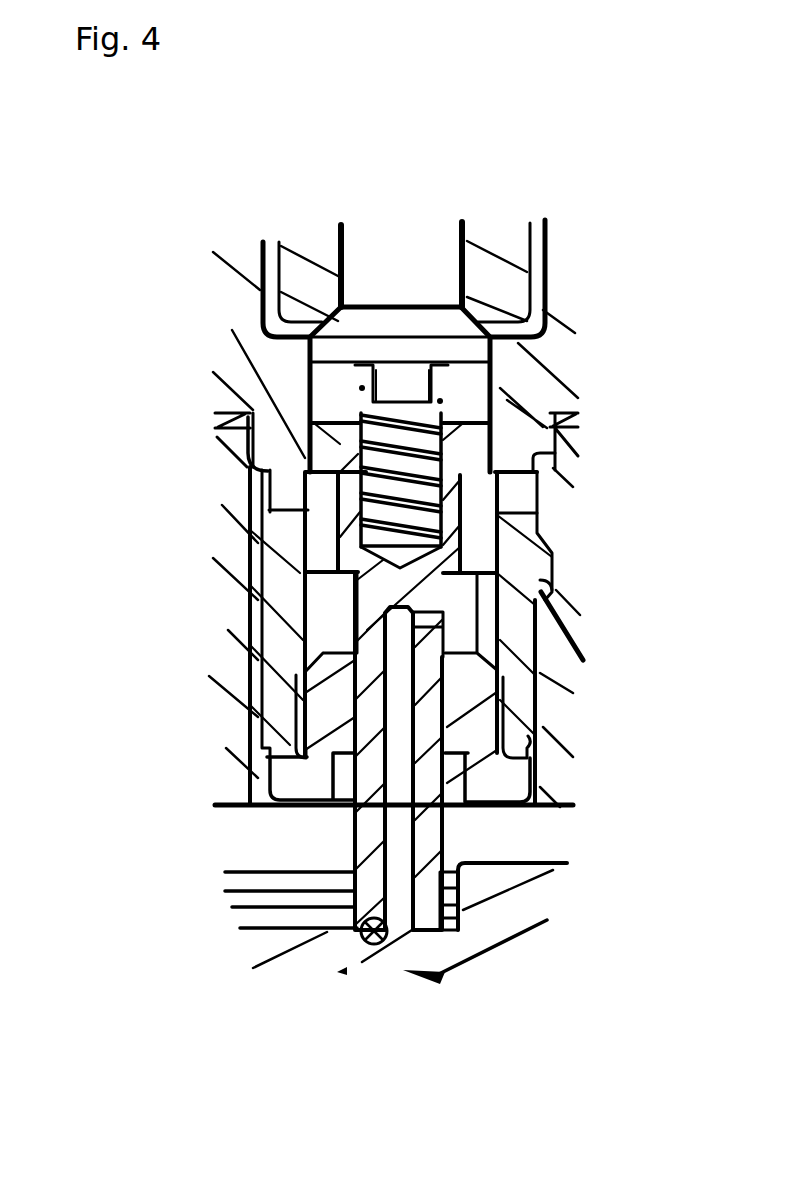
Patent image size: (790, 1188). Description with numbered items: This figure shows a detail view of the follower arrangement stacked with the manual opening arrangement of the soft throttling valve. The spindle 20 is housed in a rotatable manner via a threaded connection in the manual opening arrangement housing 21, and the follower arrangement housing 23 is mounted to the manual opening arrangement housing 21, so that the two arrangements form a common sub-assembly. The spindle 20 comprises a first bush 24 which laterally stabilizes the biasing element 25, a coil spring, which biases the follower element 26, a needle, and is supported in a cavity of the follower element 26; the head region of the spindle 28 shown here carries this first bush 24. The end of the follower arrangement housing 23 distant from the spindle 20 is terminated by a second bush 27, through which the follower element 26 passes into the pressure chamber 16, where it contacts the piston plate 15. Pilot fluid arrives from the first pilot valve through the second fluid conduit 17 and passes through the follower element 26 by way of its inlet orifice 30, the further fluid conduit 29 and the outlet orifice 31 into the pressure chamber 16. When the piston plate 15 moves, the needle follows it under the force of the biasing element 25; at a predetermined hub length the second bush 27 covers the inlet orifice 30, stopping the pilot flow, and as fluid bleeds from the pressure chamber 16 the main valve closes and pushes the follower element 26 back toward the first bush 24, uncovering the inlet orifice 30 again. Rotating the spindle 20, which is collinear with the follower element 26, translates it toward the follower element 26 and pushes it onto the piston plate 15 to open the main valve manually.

The piston plate 15 is at (492, 920).
The pressure chamber 16 is at (260, 855).
The second fluid conduit 17 is at (513, 500).
The spindle 20 is at (407, 252).
The manual opening arrangement housing 21 is at (273, 242).
The follower arrangement housing 23 is at (244, 382).
The first bush 24 is at (407, 390).
The biasing element 25 is at (443, 477).
The follower element 26 is at (343, 450).
The second bush 27 is at (295, 773).
The piston head 28 is at (407, 348).
The further fluid conduit 29 is at (397, 770).
The inlet orifice 30 is at (432, 620).
The outlet orifice 31 is at (407, 932).